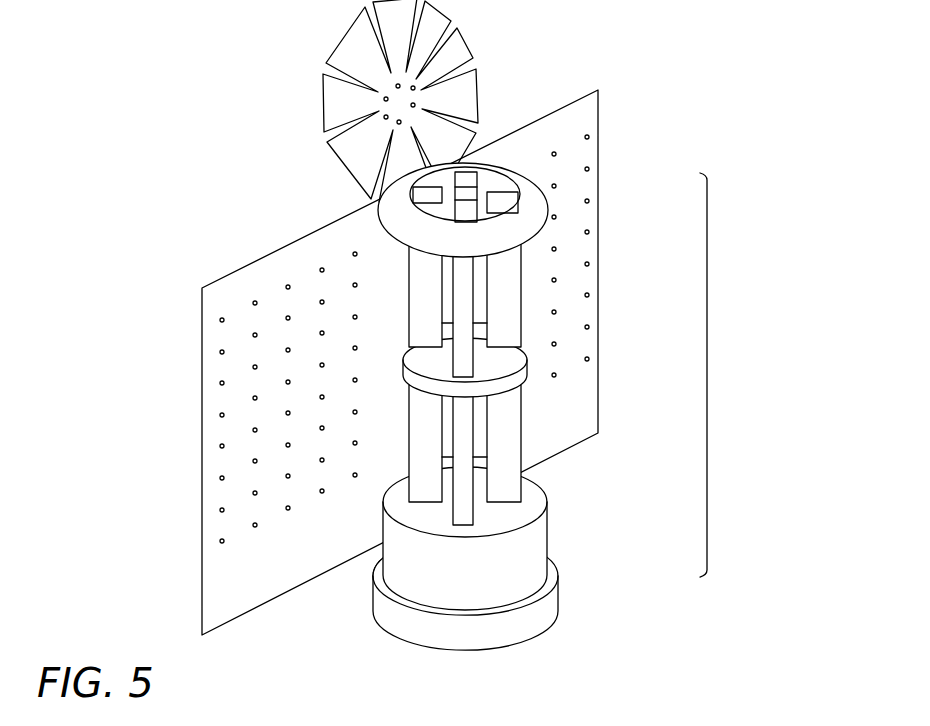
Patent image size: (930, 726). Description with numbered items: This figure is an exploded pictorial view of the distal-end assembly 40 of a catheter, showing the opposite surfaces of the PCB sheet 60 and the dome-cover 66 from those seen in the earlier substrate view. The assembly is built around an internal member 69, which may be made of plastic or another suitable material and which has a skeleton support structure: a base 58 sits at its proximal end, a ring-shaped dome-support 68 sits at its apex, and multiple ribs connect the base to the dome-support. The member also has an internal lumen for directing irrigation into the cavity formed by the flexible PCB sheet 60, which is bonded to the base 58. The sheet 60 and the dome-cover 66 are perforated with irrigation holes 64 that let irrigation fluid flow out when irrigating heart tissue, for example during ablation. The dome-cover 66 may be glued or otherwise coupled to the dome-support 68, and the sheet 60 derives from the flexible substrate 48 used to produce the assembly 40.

The distal-end assembly 40 is at (727, 100).
The flexible substrate 48 is at (202, 543).
The base 58 is at (537, 572).
The PCB sheet 60 is at (606, 336).
The irrigation holes 64 is at (222, 352).
The dome-cover 66 is at (350, 50).
The dome-support 68 is at (525, 175).
The internal member 69 is at (708, 373).